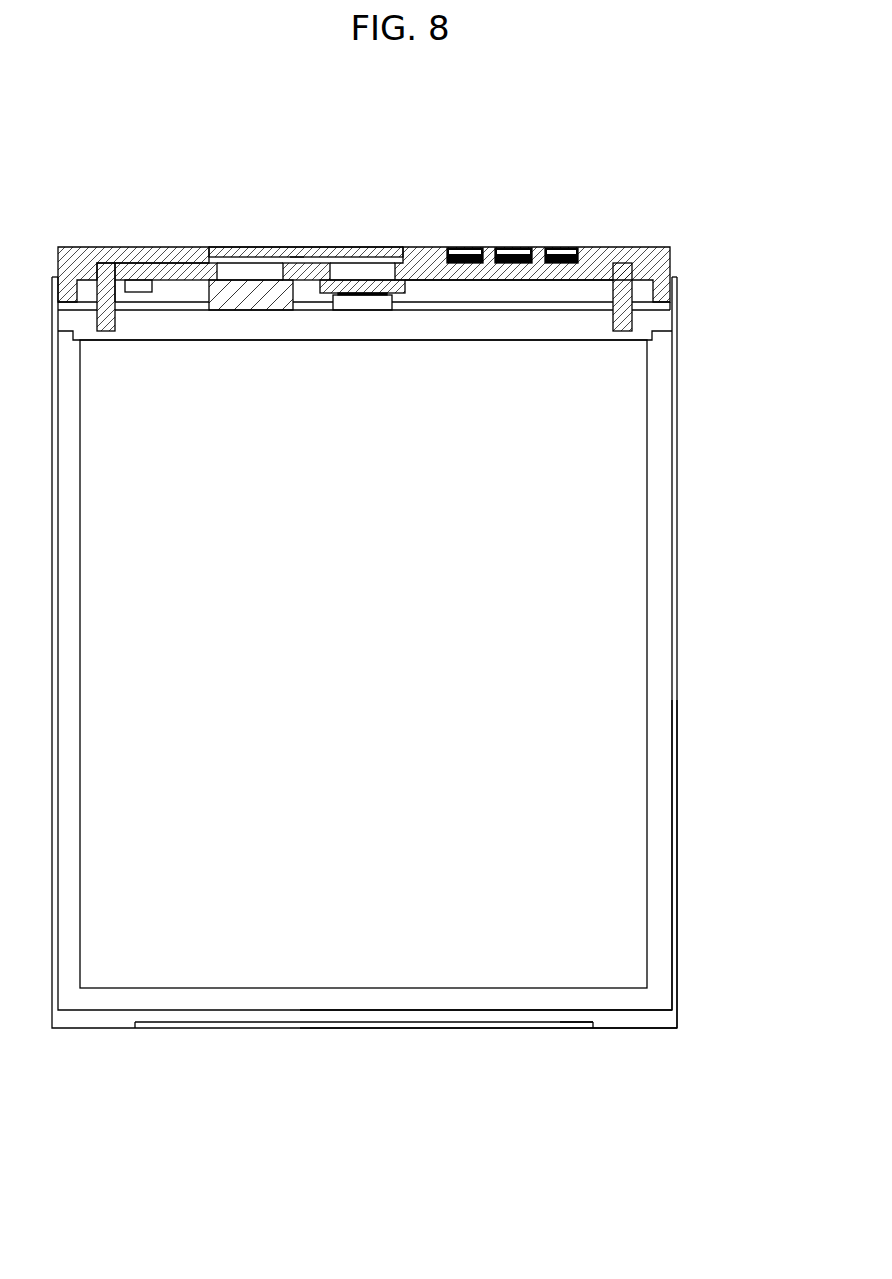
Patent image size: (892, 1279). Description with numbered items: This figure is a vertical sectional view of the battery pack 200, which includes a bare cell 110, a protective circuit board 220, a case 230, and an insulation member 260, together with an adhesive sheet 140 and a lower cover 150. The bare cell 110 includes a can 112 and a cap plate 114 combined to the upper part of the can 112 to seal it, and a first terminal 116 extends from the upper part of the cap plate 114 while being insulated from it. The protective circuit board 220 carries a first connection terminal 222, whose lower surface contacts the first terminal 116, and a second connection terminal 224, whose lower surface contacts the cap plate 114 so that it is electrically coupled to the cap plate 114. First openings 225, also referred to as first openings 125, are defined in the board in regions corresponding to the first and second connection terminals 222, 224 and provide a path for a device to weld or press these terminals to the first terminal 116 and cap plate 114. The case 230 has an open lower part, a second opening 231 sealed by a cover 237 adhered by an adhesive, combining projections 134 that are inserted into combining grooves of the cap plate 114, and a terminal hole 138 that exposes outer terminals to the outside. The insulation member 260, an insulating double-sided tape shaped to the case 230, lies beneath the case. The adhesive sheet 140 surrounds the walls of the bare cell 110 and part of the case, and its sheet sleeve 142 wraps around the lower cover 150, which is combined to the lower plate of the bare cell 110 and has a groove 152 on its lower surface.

The battery pack 200 is at (60, 154).
The bare cell 110 is at (680, 497).
The can 112 is at (655, 575).
The cap plate 114 is at (658, 322).
The first terminal 116 is at (327, 293).
The first openings 125 is at (513, 253).
The combining projections 134 is at (623, 332).
The terminal hole 138 is at (563, 250).
The adhesive sheet 140 is at (677, 962).
The sheet sleeve 142 is at (497, 1030).
The lower cover 150 is at (647, 1022).
The groove 152 is at (587, 1030).
The protective circuit board 220 is at (495, 287).
The first connection terminal 222 is at (405, 290).
The second connection terminal 224 is at (262, 300).
The first openings 225 is at (202, 262).
The case 230 is at (640, 262).
The second opening 231 is at (242, 247).
The cover 237 is at (297, 247).
The insulation member 260 is at (550, 305).